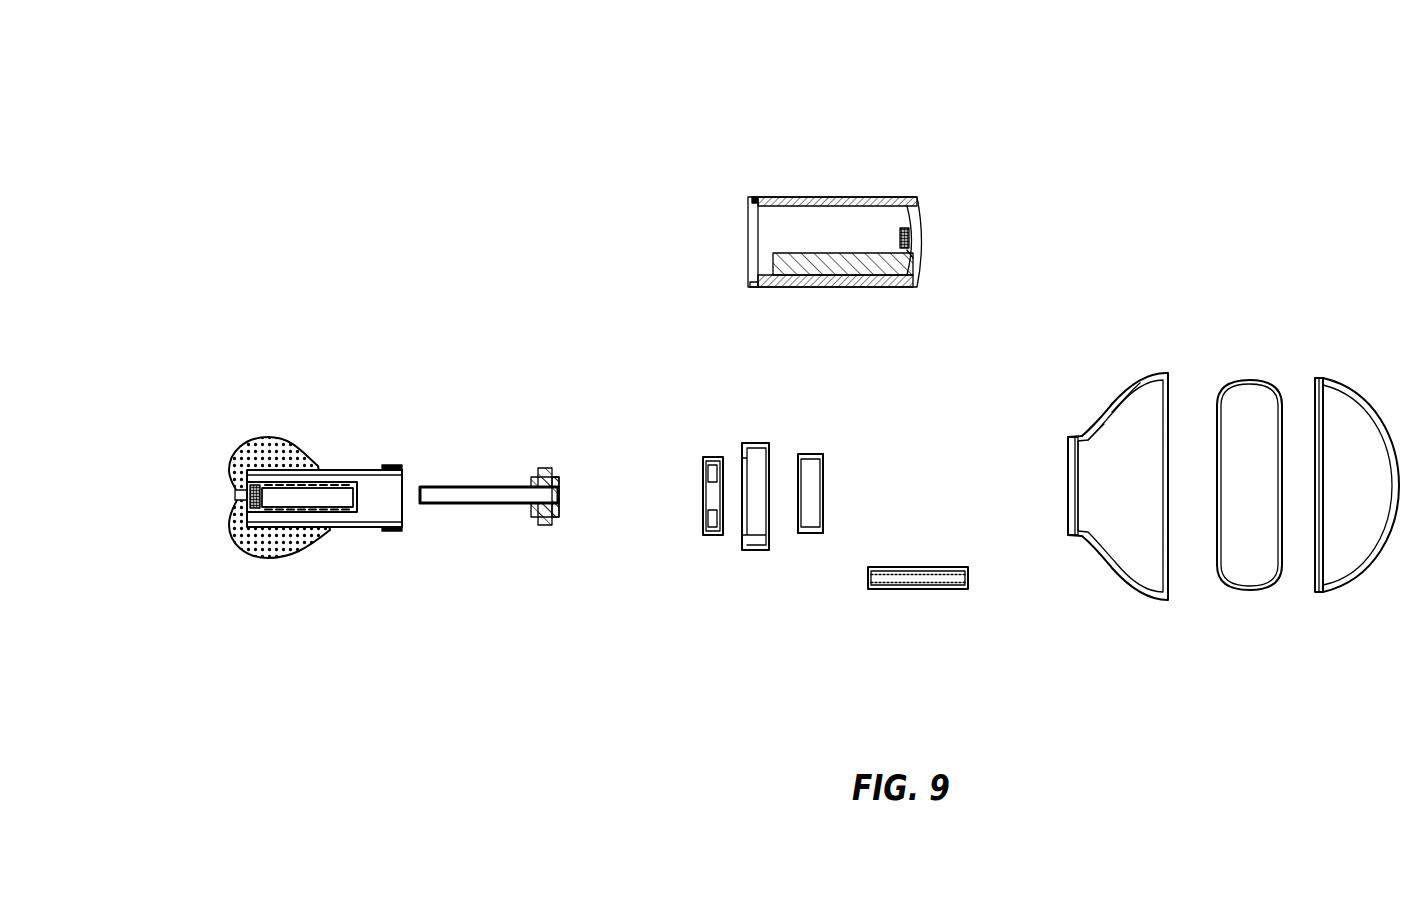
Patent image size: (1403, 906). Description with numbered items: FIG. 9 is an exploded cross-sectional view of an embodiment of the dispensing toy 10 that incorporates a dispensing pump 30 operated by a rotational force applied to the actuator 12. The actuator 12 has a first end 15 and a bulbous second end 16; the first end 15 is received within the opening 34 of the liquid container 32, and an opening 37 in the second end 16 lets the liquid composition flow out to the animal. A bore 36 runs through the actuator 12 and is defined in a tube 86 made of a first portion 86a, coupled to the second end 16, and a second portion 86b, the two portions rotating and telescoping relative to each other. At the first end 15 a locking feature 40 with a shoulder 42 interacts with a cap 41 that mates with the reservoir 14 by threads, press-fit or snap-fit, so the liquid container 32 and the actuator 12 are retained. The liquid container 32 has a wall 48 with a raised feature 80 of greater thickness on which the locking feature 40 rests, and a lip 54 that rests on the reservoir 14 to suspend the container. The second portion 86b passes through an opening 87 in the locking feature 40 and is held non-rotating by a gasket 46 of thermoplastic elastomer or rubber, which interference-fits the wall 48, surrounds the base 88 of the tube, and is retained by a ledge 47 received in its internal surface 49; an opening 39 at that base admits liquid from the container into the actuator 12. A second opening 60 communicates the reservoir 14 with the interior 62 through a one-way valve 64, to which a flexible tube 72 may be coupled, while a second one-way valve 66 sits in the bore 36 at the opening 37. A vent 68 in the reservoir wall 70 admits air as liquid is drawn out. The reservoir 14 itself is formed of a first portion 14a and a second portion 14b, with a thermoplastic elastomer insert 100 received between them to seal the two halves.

The dispensing toy 10 is at (416, 150).
The actuator 12 is at (271, 437).
The reservoir 14 is at (1335, 368).
The first portion 14a is at (1140, 598).
The second portion 14b is at (1328, 595).
The first end 15 is at (393, 540).
The second end 16 is at (261, 565).
The dispensing pump 30 is at (134, 676).
The liquid container 32 is at (858, 197).
The opening 34 is at (744, 233).
The bore 36 is at (317, 500).
The opening 37 is at (234, 496).
The opening 39 is at (564, 495).
The locking feature 40 is at (822, 510).
The cap 41 is at (757, 443).
The shoulder 42 is at (810, 452).
The gasket 46 is at (713, 455).
The ledge 47 is at (556, 518).
The wall 48 is at (880, 197).
The internal surface 49 is at (713, 537).
The lip 54 is at (752, 199).
The second opening 60 is at (910, 243).
The interior 62 is at (820, 246).
The one-way valve 64 is at (912, 256).
The second one-way valve 66 is at (240, 457).
The vent 68 is at (1092, 420).
The wall 70 is at (1143, 378).
The flexible tube 72 is at (930, 590).
The raised feature 80 is at (872, 268).
The tube 86 is at (338, 480).
The first portion 86a is at (313, 481).
The second portion 86b is at (490, 504).
The opening 87 is at (828, 489).
The base 88 is at (537, 468).
The thermoplastic elastomer insert 100 is at (1242, 593).